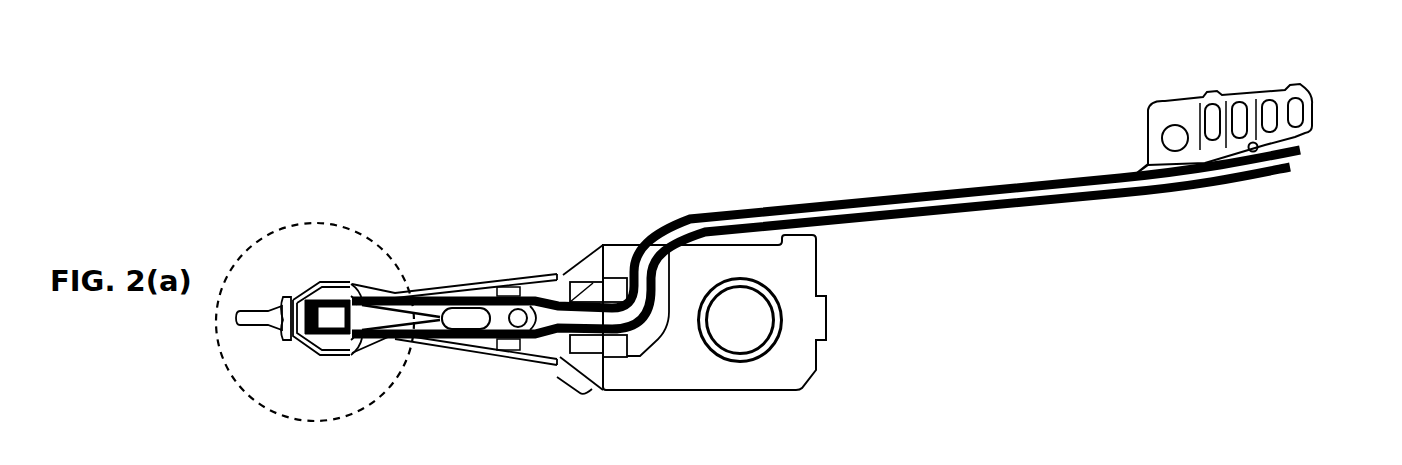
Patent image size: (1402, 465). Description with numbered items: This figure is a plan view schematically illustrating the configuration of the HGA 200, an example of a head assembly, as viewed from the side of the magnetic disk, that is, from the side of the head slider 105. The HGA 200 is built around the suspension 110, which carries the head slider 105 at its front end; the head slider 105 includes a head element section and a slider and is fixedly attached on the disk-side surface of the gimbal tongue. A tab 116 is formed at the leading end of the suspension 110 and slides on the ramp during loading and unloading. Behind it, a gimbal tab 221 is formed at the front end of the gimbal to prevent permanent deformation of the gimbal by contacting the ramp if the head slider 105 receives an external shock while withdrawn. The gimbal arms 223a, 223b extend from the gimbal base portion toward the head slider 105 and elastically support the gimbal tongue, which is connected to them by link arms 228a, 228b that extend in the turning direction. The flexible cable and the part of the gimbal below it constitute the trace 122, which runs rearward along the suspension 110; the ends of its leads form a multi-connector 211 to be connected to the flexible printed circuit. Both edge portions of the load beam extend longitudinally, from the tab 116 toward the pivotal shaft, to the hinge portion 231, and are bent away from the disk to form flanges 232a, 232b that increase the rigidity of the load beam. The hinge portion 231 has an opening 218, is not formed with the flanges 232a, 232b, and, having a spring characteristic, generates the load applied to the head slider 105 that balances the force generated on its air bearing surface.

The head slider 105 is at (368, 338).
The suspension 110 is at (432, 270).
The tab 116 is at (252, 311).
The trace 122 is at (907, 195).
The HGA 200 is at (631, 200).
The multi-connector 211 is at (1321, 90).
The opening 218 is at (597, 266).
The gimbal tab 221 is at (282, 296).
The gimbal arm 223a is at (321, 282).
The gimbal arm 223b is at (321, 356).
The link arm 228a is at (356, 292).
The link arm 228b is at (355, 338).
The hinge portion 231 is at (582, 395).
The flange 232a is at (497, 280).
The flange 232b is at (488, 357).